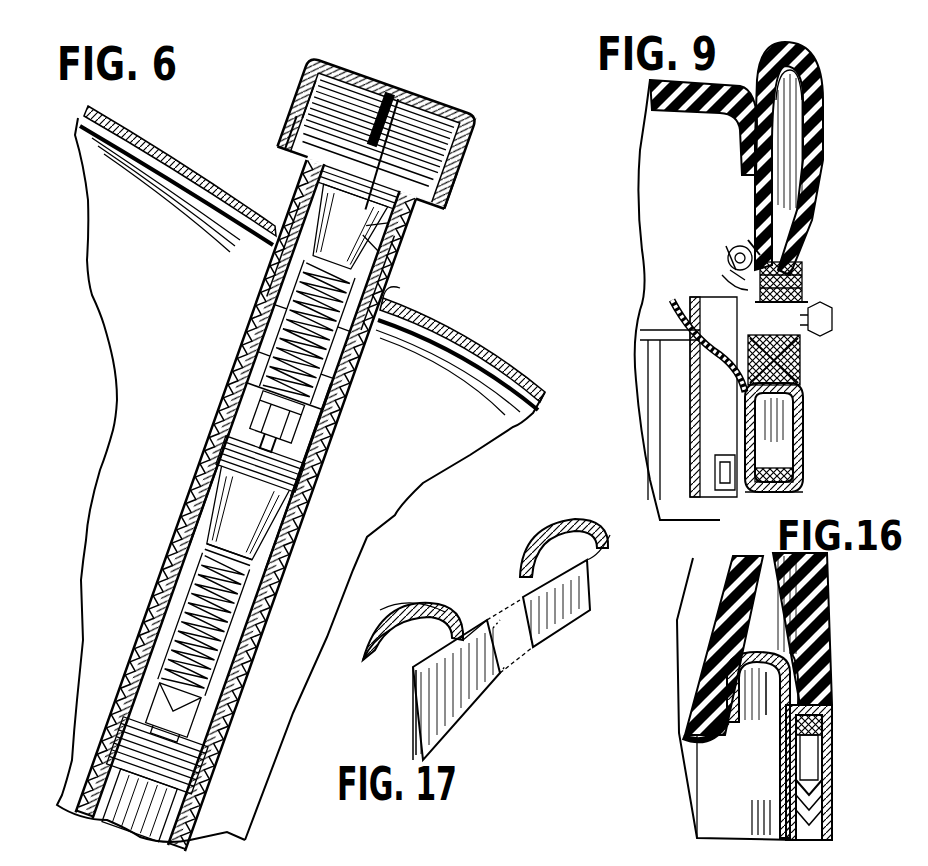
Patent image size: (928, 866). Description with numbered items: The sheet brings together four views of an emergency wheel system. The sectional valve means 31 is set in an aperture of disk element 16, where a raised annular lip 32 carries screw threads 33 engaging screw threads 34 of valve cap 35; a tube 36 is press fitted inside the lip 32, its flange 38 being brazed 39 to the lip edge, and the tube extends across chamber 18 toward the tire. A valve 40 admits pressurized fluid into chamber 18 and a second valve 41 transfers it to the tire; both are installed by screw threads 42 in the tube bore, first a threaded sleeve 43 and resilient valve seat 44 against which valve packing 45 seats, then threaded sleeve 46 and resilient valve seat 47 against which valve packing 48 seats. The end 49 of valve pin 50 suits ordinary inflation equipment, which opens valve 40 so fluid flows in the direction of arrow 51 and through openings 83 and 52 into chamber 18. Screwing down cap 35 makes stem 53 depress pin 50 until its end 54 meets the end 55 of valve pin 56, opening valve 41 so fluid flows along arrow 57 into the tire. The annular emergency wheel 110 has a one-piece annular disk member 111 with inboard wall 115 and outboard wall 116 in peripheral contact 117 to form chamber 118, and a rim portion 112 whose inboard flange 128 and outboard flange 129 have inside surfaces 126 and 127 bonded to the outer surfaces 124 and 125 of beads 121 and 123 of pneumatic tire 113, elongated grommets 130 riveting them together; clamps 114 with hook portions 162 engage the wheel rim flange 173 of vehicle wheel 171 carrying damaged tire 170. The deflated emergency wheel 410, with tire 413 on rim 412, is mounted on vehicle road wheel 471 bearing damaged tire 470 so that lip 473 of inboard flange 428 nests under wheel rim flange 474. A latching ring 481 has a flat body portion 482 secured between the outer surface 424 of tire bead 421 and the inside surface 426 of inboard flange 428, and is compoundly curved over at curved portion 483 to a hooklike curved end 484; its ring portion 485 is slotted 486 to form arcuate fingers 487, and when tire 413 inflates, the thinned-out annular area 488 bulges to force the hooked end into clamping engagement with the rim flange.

In FIG. 6, the disk element 16 is at (180, 180).
In FIG. 6, the chamber 18 is at (132, 205).
In FIG. 6, the valve means 31 is at (236, 313).
In FIG. 6, the raised annular lip 32 is at (406, 286).
In FIG. 6, the screw threads 33 is at (416, 244).
In FIG. 6, the screw threads 34 is at (456, 152).
In FIG. 6, the valve cap 35 is at (440, 94).
In FIG. 6, the tube 36 is at (273, 260).
In FIG. 6, the flange 38 is at (308, 101).
In FIG. 6, the brazed joint 39 is at (300, 120).
In FIG. 6, the valve 40 is at (440, 347).
In FIG. 6, the valve 41 is at (272, 578).
In FIG. 6, the screw threads 42 is at (194, 593).
In FIG. 6, the threaded sleeve 43 is at (201, 551).
In FIG. 6, the resilient valve seat 44 is at (201, 503).
In FIG. 6, the valve packing 45 is at (217, 490).
In FIG. 6, the threaded sleeve 46 is at (360, 363).
In FIG. 6, the resilient valve seat 47 is at (281, 210).
In FIG. 6, the valve packing 48 is at (384, 231).
In FIG. 6, the end of valve pin 49 is at (364, 130).
In FIG. 6, the valve pin 50 is at (404, 140).
In FIG. 6, the arrow 51 is at (274, 289).
In FIG. 6, the opening 52 is at (253, 343).
In FIG. 6, the stem 53 is at (394, 102).
In FIG. 6, the end of valve pin 54 is at (333, 427).
In FIG. 6, the end of valve pin 55 is at (247, 391).
In FIG. 6, the valve pin 56 is at (234, 421).
In FIG. 6, the arrow 57 is at (171, 618).
In FIG. 6, the opening 83 is at (340, 381).
In FIG. 9, the annular emergency wheel 110 is at (817, 484).
In FIG. 9, the annular disk member 111 is at (818, 405).
In FIG. 9, the rim portion 112 is at (794, 357).
In FIG. 9, the pneumatic tire 113 is at (820, 84).
In FIG. 9, the wheel-mounting clamp 114 is at (840, 318).
In FIG. 9, the inboard wall 115 is at (748, 457).
In FIG. 9, the outboard wall 116 is at (804, 452).
In FIG. 9, the peripheral contact 117 is at (773, 420).
In FIG. 9, the chamber 118 is at (784, 431).
In FIG. 9, the bead 121 is at (758, 240).
In FIG. 9, the bead 123 is at (781, 258).
In FIG. 9, the outer surface of bead 124 is at (737, 250).
In FIG. 9, the outer surface of bead 125 is at (788, 270).
In FIG. 9, the inside surface of inboard flange 126 is at (753, 301).
In FIG. 9, the inside surface of outboard flange 127 is at (791, 278).
In FIG. 9, the inboard flange 128 is at (730, 278).
In FIG. 9, the outboard flange 129 is at (798, 294).
In FIG. 9, the elongated grommet 130 is at (802, 342).
In FIG. 9, the hook portion 162 is at (729, 258).
In FIG. 9, the damaged tire 170 is at (653, 98).
In FIG. 9, the vehicle wheel 171 is at (630, 310).
In FIG. 9, the wheel rim flange 173 is at (737, 264).
In FIG. 16, the emergency wheel 410 is at (850, 826).
In FIG. 16, the rim 412 is at (821, 707).
In FIG. 16, the tire 413 is at (820, 597).
In FIG. 16, the tire bead 421 is at (828, 750).
In FIG. 16, the outer surface of tire bead 424 is at (828, 720).
In FIG. 16, the inside surface of inboard flange 426 is at (827, 787).
In FIG. 16, the inboard flange 428 is at (787, 760).
In FIG. 16, the damaged tire 470 is at (683, 739).
In FIG. 16, the vehicle road wheel 471 is at (673, 755).
In FIG. 16, the lip 473 is at (763, 703).
In FIG. 16, the wheel rim flange 474 is at (753, 687).
In FIG. 17, the latching ring 481 is at (493, 678).
In FIG. 16, the latching ring 481 is at (753, 657).
In FIG. 17, the body portion 482 is at (413, 727).
In FIG. 16, the body portion 482 is at (787, 783).
In FIG. 17, the curved portion 483 is at (610, 536).
In FIG. 16, the curved portion 483 is at (780, 663).
In FIG. 17, the curved end 484 is at (371, 657).
In FIG. 17, the ring portion 485 is at (428, 610).
In FIG. 17, the slot 486 is at (493, 590).
In FIG. 17, the arcuate finger 487 is at (391, 616).
In FIG. 16, the thinned-out annular area 488 is at (794, 667).